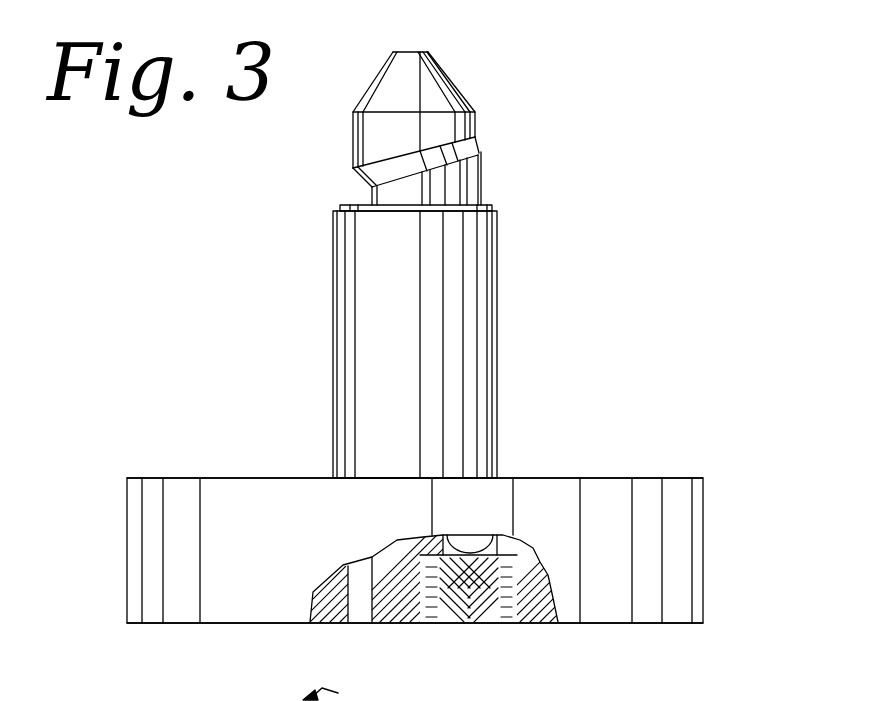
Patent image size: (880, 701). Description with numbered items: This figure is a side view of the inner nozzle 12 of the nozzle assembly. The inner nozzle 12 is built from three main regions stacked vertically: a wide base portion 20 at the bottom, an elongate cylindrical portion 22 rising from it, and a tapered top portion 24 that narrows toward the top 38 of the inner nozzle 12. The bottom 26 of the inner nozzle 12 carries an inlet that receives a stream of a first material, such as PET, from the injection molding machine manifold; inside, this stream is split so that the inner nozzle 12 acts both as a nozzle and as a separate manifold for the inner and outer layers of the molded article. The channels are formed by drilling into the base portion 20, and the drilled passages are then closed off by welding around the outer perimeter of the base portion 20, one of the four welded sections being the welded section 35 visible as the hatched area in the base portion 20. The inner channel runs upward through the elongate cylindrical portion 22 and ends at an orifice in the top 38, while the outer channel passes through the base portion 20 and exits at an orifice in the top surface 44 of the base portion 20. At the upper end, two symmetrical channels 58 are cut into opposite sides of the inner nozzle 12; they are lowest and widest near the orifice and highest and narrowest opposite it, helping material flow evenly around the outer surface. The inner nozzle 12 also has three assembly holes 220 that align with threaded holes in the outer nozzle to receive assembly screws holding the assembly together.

The inner nozzle 12 is at (525, 239).
The base portion 20 is at (475, 553).
The elongate cylindrical portion 22 is at (483, 353).
The tapered top portion 24 is at (457, 82).
The bottom 26 is at (613, 623).
The welded section 35 is at (472, 593).
The top 38 is at (425, 50).
The top surface 44 is at (307, 477).
The symmetrical channels 58 is at (479, 170).
The assembly holes 220 is at (465, 616).